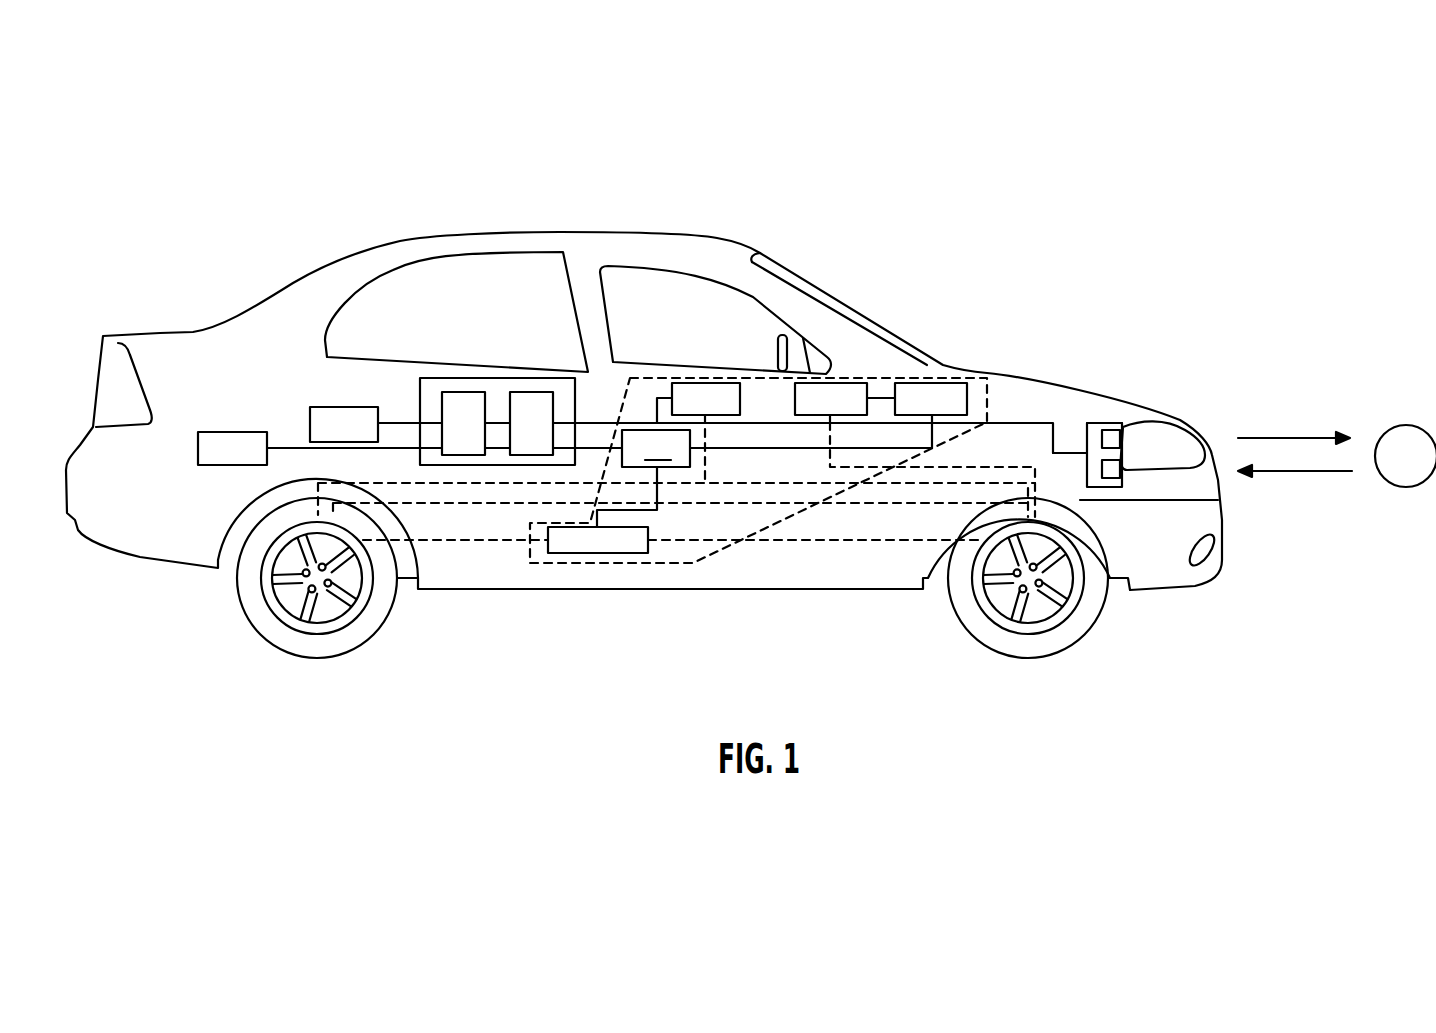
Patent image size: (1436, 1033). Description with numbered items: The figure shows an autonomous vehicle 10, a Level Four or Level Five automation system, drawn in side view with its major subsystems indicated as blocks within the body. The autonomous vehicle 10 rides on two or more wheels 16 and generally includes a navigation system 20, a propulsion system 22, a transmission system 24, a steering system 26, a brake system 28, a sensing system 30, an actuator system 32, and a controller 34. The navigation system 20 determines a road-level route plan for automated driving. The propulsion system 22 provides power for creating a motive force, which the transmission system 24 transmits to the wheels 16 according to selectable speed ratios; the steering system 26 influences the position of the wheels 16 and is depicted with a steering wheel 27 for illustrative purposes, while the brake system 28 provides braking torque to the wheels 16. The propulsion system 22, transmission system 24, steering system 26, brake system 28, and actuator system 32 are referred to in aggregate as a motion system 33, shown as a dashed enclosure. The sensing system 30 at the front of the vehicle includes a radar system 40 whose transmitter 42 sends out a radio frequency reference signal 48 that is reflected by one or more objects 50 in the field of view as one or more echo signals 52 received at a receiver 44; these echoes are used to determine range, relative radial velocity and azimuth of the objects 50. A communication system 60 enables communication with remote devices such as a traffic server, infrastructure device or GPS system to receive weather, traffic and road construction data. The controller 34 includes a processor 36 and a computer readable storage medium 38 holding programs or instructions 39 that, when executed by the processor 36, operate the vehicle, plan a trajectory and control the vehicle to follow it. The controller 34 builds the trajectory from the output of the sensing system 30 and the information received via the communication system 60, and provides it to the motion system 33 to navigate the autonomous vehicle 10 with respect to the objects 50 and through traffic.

The autonomous vehicle 10 is at (193, 133).
The wheels 16 is at (317, 660).
The navigation system 20 is at (318, 407).
The propulsion system 22 is at (935, 383).
The transmission system 24 is at (842, 383).
The steering system 26 is at (705, 383).
The steering wheel 27 is at (768, 330).
The brake system 28 is at (597, 553).
The sensing system 30 is at (1182, 345).
The actuator system 32 is at (830, 475).
The motion system 33 is at (798, 520).
The controller 34 is at (500, 378).
The processor 36 is at (452, 392).
The storage medium 38 is at (533, 392).
The instructions 39 is at (527, 455).
The radar system 40 is at (1115, 490).
The transmitter 42 is at (1113, 430).
The receiver 44 is at (1115, 470).
The reference signal 48 is at (1290, 438).
The objects 50 is at (1400, 425).
The echo signals 52 is at (1290, 471).
The communication system 60 is at (217, 432).